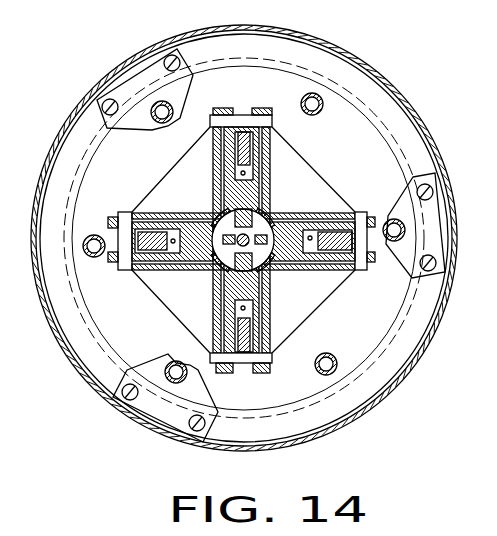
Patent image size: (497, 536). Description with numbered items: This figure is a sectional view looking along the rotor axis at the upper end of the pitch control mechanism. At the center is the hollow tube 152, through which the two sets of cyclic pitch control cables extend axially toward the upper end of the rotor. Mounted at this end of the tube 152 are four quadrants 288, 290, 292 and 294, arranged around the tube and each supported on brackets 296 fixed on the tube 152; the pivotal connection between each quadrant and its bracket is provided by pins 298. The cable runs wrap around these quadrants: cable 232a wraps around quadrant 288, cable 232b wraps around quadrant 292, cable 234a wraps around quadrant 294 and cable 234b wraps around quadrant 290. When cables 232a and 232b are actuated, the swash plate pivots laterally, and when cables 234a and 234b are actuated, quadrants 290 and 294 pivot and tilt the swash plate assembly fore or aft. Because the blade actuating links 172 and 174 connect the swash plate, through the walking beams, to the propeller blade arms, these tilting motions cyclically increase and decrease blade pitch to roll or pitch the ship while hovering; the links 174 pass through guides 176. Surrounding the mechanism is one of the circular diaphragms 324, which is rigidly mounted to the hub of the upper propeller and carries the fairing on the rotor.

The tube 152 is at (233, 268).
The link 172 is at (319, 114).
The link 174 is at (165, 124).
The guides 176 is at (398, 200).
The control cable 232a is at (266, 226).
The control cable 232b is at (214, 265).
The control cable 234a is at (219, 212).
The control cable 234b is at (263, 270).
The quadrant 288 is at (294, 230).
The quadrant 290 is at (264, 297).
The quadrant 292 is at (194, 258).
The quadrant 294 is at (254, 176).
The brackets 296 is at (262, 336).
The pins 298 is at (272, 360).
The circular diaphragms 324 is at (418, 138).